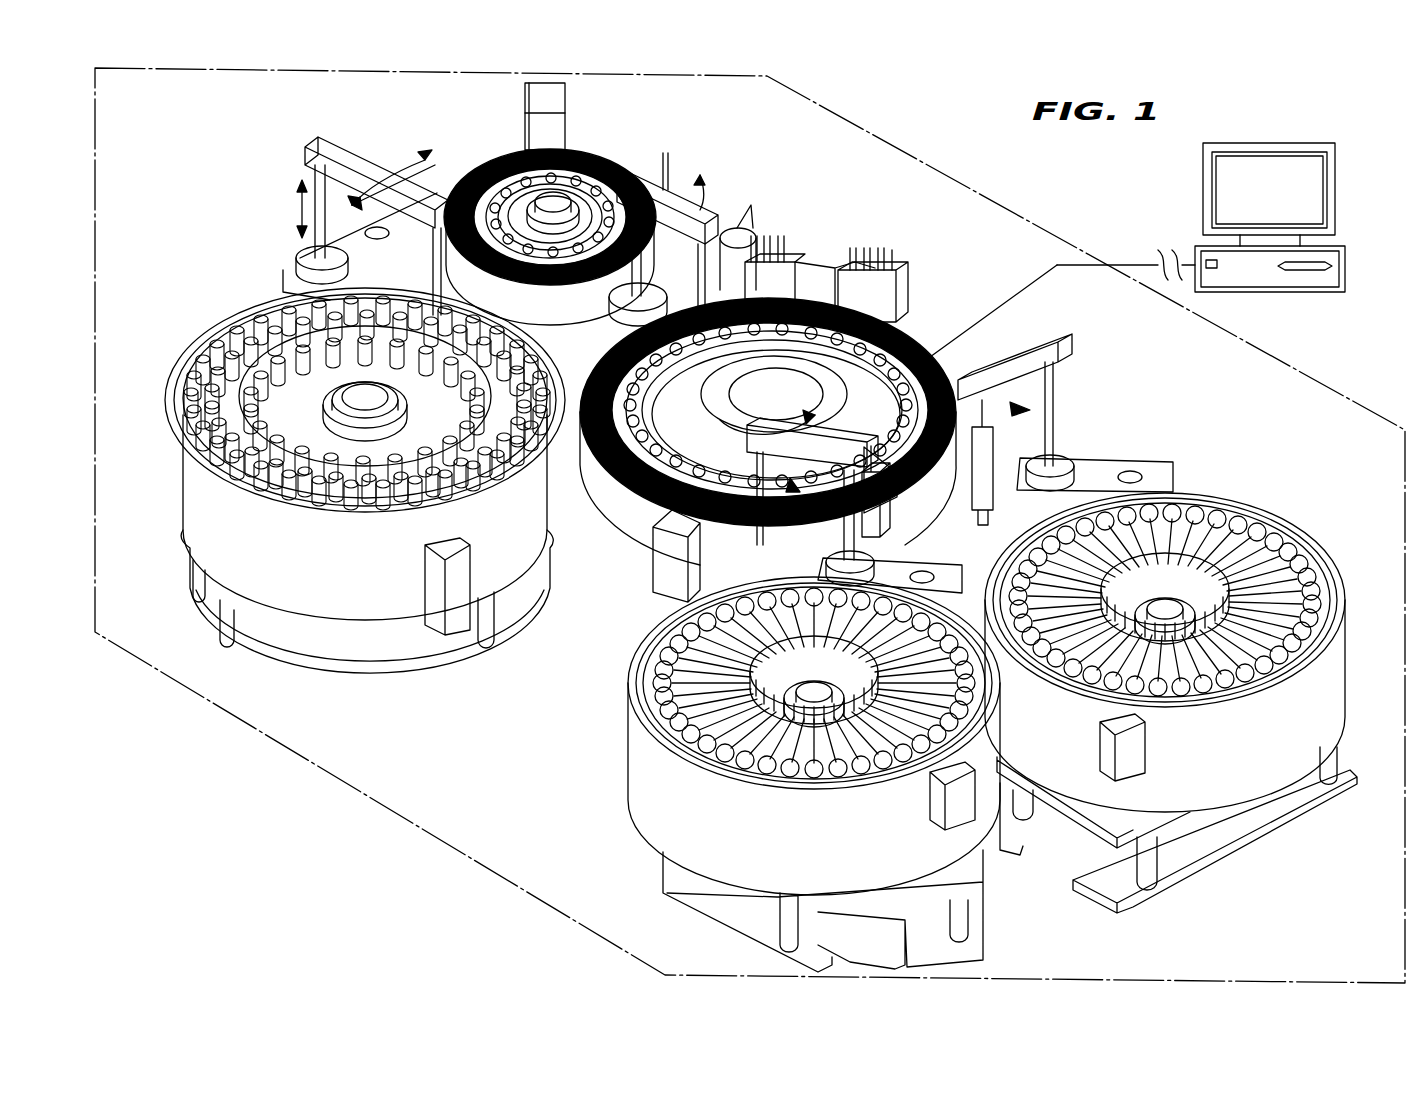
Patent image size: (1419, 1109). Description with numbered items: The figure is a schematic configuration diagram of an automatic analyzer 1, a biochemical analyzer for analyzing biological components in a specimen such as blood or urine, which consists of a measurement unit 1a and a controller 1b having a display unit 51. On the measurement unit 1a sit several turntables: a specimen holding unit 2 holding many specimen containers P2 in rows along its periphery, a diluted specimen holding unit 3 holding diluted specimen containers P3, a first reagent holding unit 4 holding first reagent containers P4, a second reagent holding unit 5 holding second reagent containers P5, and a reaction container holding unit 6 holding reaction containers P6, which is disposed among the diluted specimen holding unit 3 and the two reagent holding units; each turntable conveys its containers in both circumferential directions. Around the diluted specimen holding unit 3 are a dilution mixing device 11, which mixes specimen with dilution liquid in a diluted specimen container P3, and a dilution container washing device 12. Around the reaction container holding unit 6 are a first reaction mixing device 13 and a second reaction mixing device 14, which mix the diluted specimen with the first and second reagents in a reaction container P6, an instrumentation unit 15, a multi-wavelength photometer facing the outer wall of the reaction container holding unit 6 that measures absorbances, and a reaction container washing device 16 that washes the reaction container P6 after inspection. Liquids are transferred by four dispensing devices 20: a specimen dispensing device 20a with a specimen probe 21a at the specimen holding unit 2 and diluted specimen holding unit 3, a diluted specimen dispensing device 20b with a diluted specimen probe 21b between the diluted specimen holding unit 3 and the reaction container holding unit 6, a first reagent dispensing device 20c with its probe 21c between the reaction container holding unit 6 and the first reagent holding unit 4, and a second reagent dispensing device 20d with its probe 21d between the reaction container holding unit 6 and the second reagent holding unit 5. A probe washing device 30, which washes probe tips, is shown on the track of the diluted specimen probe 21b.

The automatic analyzer 1 is at (1402, 117).
The measurement unit 1a is at (966, 189).
The controller 1b is at (1161, 223).
The specimen holding unit 2 is at (190, 485).
The diluted specimen holding unit 3 is at (498, 172).
The first reagent holding unit 4 is at (648, 795).
The second reagent holding unit 5 is at (1330, 680).
The reaction container holding unit 6 is at (642, 505).
The dilution mixing device 11 is at (527, 100).
The dilution container washing device 12 is at (670, 175).
The first reaction mixing device 13 is at (905, 500).
The second reaction mixing device 14 is at (952, 385).
The instrumentation unit 15 is at (668, 548).
The reaction container washing device 16 is at (790, 258).
The dispensing devices 20 is at (689, 383).
The specimen dispensing device 20a is at (326, 201).
The diluted specimen dispensing device 20b is at (699, 212).
The first reagent dispensing device 20c is at (759, 462).
The second reagent dispensing device 20d is at (1065, 404).
The specimen probe 21a is at (310, 268).
The diluted specimen probe 21b is at (705, 255).
The dispensing probe of the first reagent dispensing device 21c is at (755, 540).
The dispensing probe of the second reagent dispensing device 21d is at (1000, 442).
The probe washing device 30 is at (758, 237).
The display unit 51 is at (1318, 200).
The specimen container P2 is at (262, 345).
The diluted specimen container P3 is at (603, 165).
The first reagent container P4 is at (660, 725).
The second reagent container P5 is at (1250, 533).
The reaction container P6 is at (902, 395).